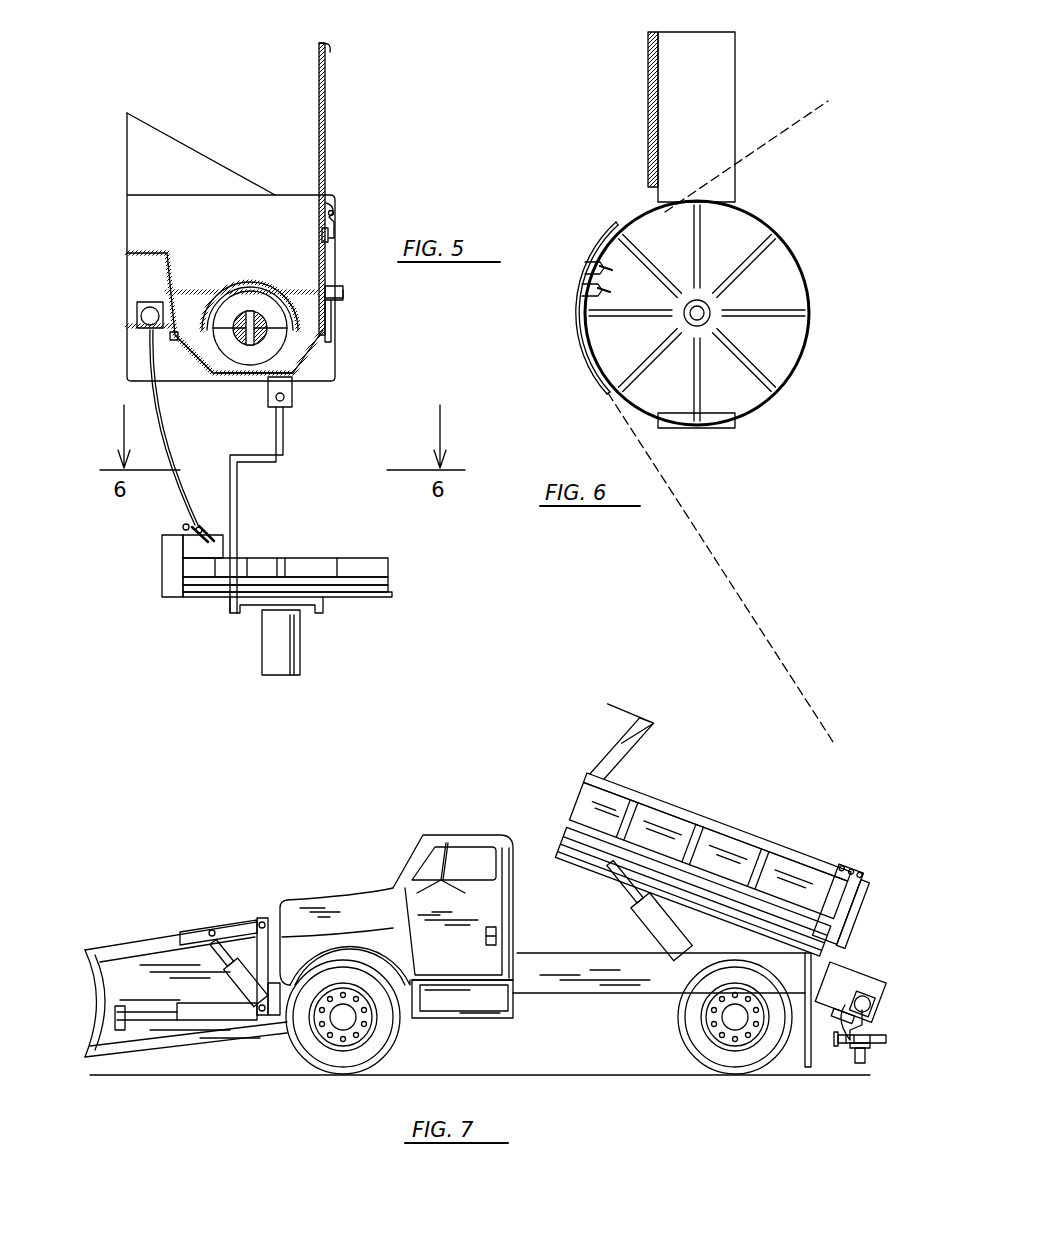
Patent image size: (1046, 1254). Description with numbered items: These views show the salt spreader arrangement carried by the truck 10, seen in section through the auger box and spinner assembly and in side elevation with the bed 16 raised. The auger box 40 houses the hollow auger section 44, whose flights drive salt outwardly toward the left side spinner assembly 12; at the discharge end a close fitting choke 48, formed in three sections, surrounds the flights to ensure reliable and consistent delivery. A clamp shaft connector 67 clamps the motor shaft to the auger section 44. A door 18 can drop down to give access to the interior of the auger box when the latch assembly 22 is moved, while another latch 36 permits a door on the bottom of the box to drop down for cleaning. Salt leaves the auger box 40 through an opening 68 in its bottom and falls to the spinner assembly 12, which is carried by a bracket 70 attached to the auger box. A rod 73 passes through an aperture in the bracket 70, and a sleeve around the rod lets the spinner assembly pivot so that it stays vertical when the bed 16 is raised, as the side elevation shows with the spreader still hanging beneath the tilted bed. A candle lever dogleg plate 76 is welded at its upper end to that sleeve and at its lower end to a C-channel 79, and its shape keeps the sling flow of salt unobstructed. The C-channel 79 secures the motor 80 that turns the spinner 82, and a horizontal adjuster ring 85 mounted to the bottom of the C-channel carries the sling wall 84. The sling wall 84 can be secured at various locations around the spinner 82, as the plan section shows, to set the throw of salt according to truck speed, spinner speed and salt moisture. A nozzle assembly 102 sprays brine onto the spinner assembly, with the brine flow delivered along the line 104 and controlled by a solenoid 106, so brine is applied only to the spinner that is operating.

In FIG. 7, the truck 10 is at (395, 822).
In FIG. 5, the left side spinner assembly 12 is at (336, 470).
In FIG. 7, the left side spinner assembly 12 is at (888, 1052).
In FIG. 7, the bed 16 is at (727, 806).
In FIG. 5, the door 18 is at (325, 88).
In FIG. 5, the latch assembly 22 is at (336, 214).
In FIG. 5, the latch 36 is at (345, 298).
In FIG. 5, the auger box 40 is at (313, 342).
In FIG. 5, the auger section 44 is at (250, 303).
In FIG. 5, the choke 48 is at (268, 290).
In FIG. 5, the clamp shaft connector 67 is at (246, 310).
In FIG. 5, the opening 68 is at (246, 380).
In FIG. 5, the bracket 70 is at (293, 390).
In FIG. 5, the rod 73 is at (277, 401).
In FIG. 5, the candle lever dogleg plate 76 is at (237, 512).
In FIG. 6, the candle lever dogleg plate 76 is at (652, 108).
In FIG. 5, the C-channel 79 is at (325, 608).
In FIG. 6, the C-channel 79 is at (710, 82).
In FIG. 5, the motor 80 is at (286, 650).
In FIG. 5, the spinner 82 is at (390, 566).
In FIG. 6, the spinner 82 is at (778, 278).
In FIG. 5, the sling wall 84 is at (160, 556).
In FIG. 6, the sling wall 84 is at (586, 320).
In FIG. 5, the horizontal adjuster ring 85 is at (392, 597).
In FIG. 6, the horizontal adjuster ring 85 is at (805, 360).
In FIG. 5, the nozzle assembly 102 is at (183, 526).
In FIG. 6, the nozzle assembly 102 is at (592, 262).
In FIG. 5, the hose 104 is at (160, 395).
In FIG. 5, the solenoid 106 is at (150, 310).